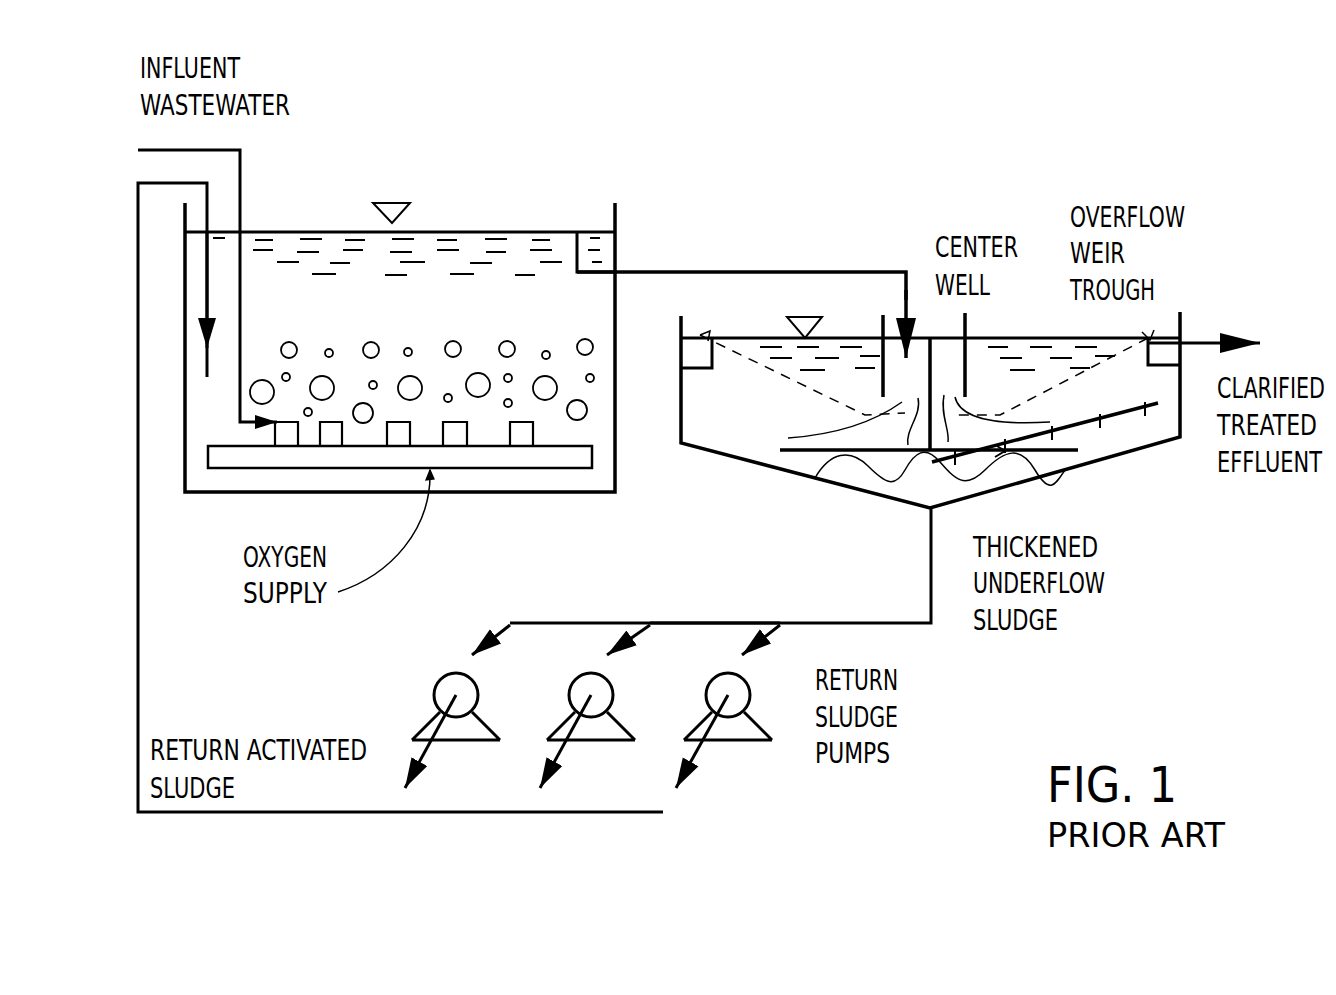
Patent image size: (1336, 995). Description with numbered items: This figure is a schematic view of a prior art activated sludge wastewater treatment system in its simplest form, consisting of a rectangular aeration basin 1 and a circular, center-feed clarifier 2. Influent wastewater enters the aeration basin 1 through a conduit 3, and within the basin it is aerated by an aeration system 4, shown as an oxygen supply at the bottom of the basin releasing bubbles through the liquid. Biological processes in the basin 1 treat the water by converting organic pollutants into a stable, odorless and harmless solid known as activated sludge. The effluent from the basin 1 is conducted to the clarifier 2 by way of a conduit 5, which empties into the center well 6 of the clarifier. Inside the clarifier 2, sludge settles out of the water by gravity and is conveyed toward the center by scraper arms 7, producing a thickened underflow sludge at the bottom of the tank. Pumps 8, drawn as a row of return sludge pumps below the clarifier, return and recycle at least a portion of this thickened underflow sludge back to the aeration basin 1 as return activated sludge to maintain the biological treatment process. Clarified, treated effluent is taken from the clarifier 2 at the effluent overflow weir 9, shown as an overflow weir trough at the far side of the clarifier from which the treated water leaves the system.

The aeration basin 1 is at (540, 306).
The clarifier 2 is at (748, 427).
The conduit 3 is at (241, 196).
The aeration system 4 is at (573, 453).
The conduit 5 is at (808, 272).
The center well 6 is at (967, 337).
The scraper arms 7 is at (1125, 415).
The pumps 8 is at (456, 742).
The effluent overflow weir 9 is at (1182, 354).